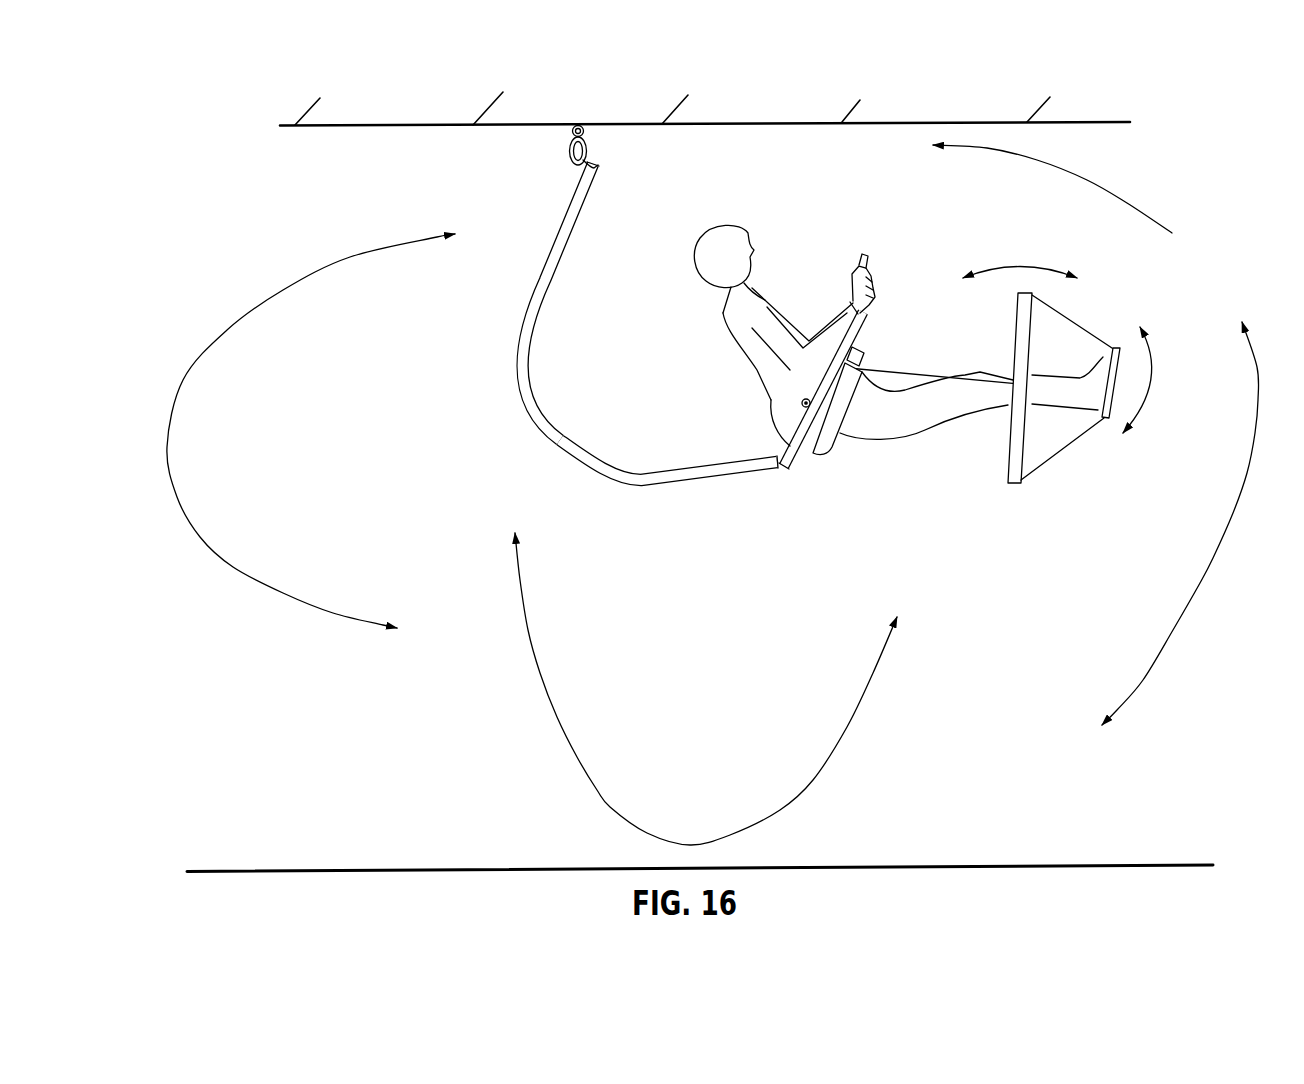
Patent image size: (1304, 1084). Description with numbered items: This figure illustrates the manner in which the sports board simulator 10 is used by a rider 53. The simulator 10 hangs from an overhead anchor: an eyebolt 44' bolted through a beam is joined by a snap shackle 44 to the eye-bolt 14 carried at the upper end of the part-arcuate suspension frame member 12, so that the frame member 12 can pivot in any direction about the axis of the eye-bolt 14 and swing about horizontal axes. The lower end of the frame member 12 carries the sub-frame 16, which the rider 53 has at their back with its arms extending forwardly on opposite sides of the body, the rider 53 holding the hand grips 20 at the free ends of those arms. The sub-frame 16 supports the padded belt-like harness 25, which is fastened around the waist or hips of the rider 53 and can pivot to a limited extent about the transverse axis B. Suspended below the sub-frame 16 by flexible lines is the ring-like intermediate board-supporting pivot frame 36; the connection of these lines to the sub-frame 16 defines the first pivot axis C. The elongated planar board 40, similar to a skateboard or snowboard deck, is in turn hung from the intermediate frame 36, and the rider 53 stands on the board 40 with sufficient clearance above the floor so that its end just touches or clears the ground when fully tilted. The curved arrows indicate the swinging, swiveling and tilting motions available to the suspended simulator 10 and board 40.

The sports board simulator 10 is at (633, 490).
The suspension frame member 12 is at (522, 321).
The eye-bolt 14 is at (577, 173).
The sub-frame 16 is at (796, 459).
The hand grips 20 is at (861, 262).
The harness 25 is at (831, 456).
The intermediate board-supporting pivot frame 36 is at (1002, 466).
The board 40 is at (1117, 347).
The snap shackle 44 is at (546, 163).
The eyebolt 44' is at (544, 142).
The rider 53 is at (876, 323).
The axis B- B is at (801, 404).
The first pivot axis C- C is at (858, 352).